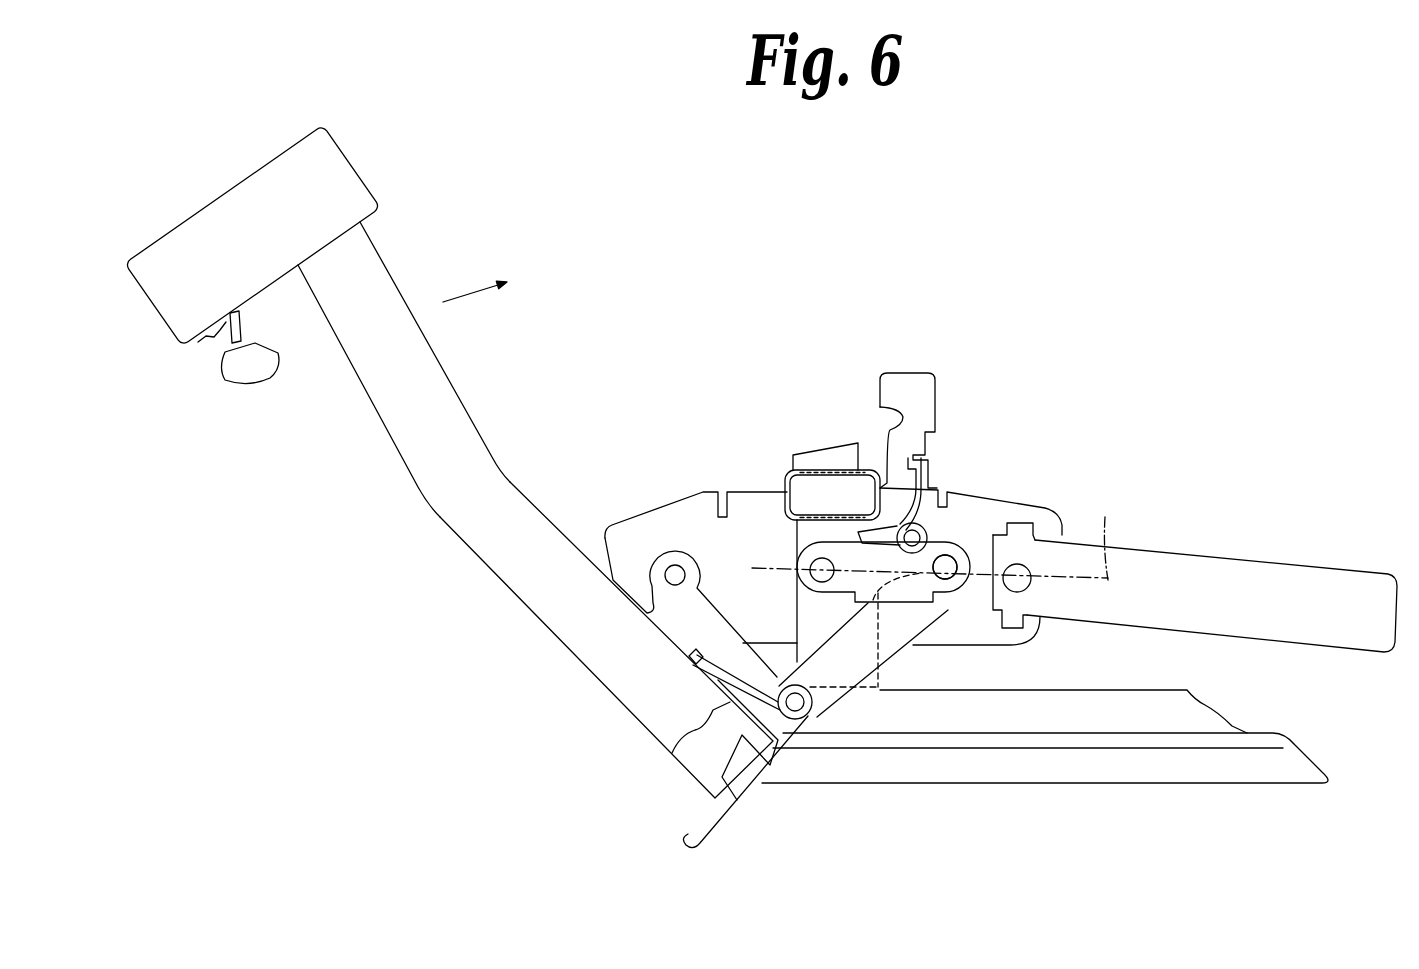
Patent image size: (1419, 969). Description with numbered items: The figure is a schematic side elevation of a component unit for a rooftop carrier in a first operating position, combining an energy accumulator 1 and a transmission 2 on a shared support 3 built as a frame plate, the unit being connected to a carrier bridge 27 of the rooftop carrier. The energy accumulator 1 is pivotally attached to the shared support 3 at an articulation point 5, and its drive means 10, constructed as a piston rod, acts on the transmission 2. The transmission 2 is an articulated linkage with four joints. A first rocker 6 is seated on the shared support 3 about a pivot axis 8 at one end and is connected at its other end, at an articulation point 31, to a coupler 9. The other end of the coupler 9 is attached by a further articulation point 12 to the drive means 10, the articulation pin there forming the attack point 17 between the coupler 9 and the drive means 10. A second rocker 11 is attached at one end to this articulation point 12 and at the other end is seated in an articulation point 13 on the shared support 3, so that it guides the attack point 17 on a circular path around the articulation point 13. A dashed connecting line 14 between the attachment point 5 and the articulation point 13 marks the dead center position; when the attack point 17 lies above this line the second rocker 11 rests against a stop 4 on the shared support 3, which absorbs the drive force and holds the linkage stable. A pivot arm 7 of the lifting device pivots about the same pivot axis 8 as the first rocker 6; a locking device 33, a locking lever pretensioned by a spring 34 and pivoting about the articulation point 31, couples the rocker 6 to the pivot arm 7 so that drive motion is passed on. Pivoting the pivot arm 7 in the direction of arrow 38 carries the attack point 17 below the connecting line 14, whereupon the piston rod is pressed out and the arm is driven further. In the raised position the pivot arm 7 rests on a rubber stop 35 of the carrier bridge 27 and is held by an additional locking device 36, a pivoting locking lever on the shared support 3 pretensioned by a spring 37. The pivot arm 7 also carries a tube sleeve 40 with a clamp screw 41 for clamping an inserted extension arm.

The energy accumulator 1 is at (1334, 580).
The transmission 2 is at (880, 708).
The shared support 3 is at (698, 500).
The stop 4 is at (950, 543).
The articulation point 5 is at (1020, 565).
The first rocker 6 is at (683, 638).
The pivot arm 7 is at (468, 538).
The pivot axis 8 is at (673, 563).
The coupler 9 is at (890, 655).
The drive means 10 is at (1000, 538).
The second rocker 11 is at (912, 596).
The articulation point 12 is at (982, 558).
The attack point 17 is at (945, 567).
The articulation point 13 is at (797, 545).
The connecting line 14 is at (1104, 522).
The carrier bridge 27 is at (788, 477).
The articulation point 31 is at (803, 720).
The locking device 33 is at (742, 798).
The spring 34 is at (707, 668).
The rubber stop 35 is at (835, 452).
The locking device 36 is at (935, 383).
The spring 37 is at (907, 500).
The arrow 38 is at (475, 282).
The tube sleeve 40 is at (343, 160).
The clamp screw 41 is at (213, 349).